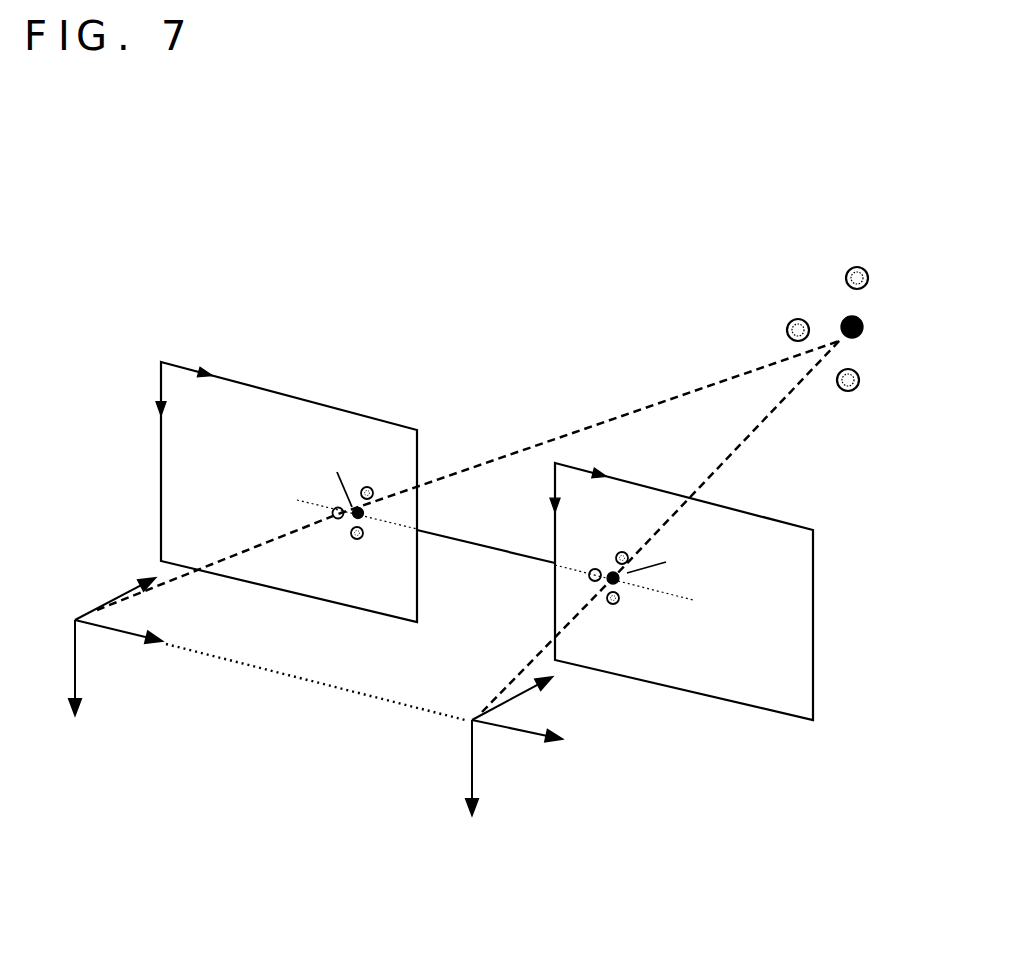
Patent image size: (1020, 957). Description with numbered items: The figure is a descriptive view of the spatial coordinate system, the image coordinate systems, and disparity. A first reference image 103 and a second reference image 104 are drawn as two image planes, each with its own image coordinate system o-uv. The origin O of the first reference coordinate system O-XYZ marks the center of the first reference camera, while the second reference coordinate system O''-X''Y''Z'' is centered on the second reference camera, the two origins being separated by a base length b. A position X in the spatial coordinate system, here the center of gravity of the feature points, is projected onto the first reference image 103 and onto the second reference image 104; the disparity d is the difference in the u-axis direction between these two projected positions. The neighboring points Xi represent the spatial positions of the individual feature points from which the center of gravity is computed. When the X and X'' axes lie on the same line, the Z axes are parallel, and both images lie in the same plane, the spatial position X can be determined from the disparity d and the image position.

The first reference image 103 is at (743, 695).
The second reference image 104 is at (348, 595).
The position in spatial coordinate system X is at (868, 328).
The spatial position of i-th feature point Xi is at (845, 272).
The origin of first reference coordinate system O is at (319, 686).